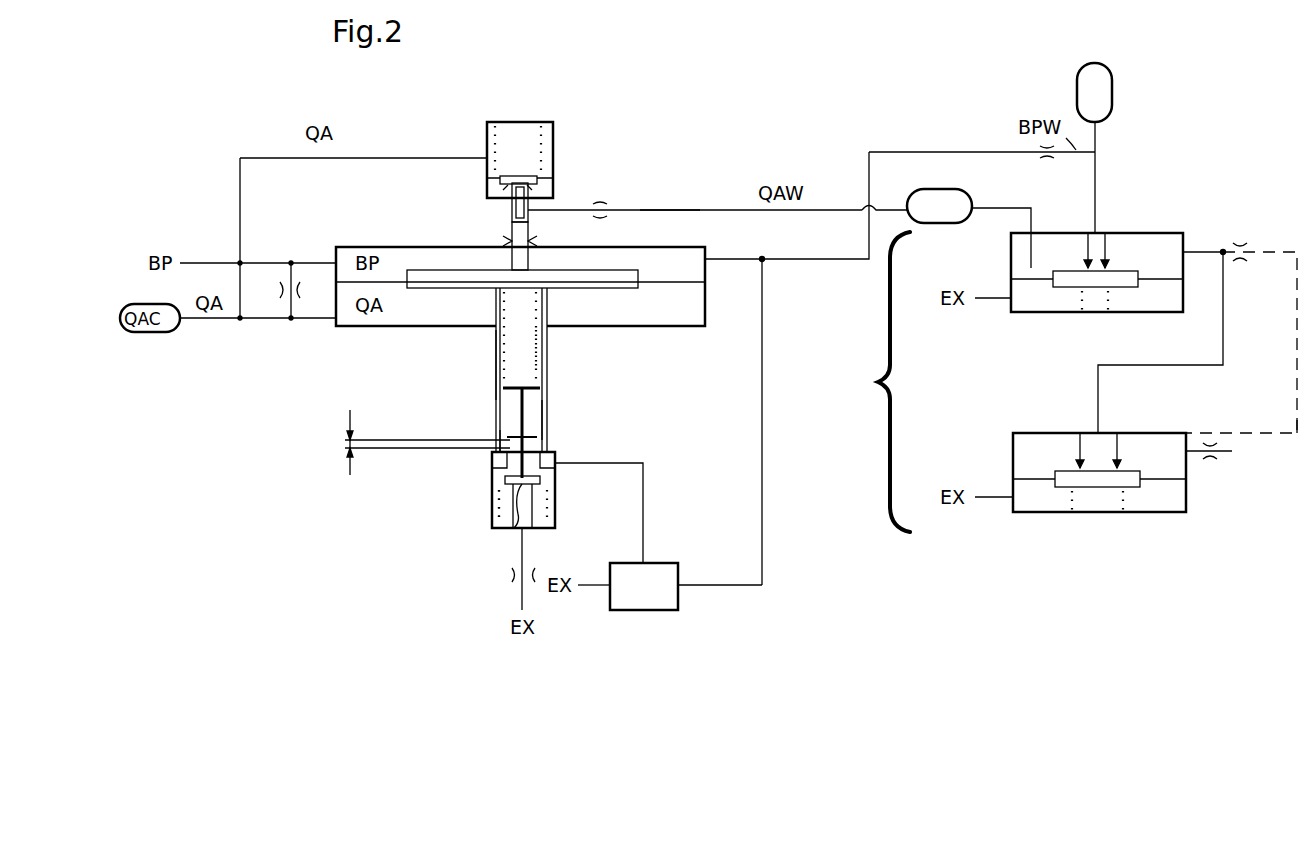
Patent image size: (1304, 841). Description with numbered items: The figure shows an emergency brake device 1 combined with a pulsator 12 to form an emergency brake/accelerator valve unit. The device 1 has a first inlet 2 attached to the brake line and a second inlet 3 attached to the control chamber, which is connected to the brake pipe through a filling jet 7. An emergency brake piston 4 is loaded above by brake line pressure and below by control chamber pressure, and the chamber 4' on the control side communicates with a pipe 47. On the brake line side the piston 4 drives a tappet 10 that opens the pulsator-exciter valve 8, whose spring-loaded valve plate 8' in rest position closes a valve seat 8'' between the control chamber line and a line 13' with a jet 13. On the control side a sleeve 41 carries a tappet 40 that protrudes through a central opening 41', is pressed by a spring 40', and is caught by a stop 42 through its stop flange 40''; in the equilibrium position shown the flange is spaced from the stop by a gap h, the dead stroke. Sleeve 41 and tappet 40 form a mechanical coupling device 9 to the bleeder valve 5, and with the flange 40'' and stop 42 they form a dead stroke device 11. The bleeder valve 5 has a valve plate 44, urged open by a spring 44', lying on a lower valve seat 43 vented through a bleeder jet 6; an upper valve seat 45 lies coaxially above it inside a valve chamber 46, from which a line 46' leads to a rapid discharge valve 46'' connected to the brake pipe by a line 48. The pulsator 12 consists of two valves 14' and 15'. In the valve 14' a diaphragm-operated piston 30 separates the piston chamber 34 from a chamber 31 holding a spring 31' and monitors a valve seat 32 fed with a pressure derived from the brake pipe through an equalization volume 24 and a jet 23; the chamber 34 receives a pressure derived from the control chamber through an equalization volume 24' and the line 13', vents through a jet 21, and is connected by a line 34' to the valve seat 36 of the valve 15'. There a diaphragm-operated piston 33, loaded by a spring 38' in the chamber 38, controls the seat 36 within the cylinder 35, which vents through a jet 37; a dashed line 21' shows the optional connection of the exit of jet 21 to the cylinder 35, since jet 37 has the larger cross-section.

The emergency brake device 1 is at (425, 335).
The first inlet 2 is at (353, 252).
The second inlet 3 is at (335, 330).
The emergency brake piston 4 is at (522, 250).
The chamber 4' is at (671, 323).
The QA bleeder valve 5 is at (485, 492).
The QA bleeder jet 6 is at (536, 570).
The filling jet 7 is at (280, 290).
The pulsator-exciter valve 8 is at (546, 155).
The valve plate 8' is at (518, 163).
The valve seat 8'' is at (492, 200).
The mechanical coupling device 9 is at (549, 398).
The tappet 10 is at (512, 230).
The dead stroke device 11 is at (513, 414).
The pulsator 12 is at (876, 382).
The jet 13 is at (695, 192).
The line 13' is at (673, 188).
The first valve 14' is at (1106, 254).
The second valve 15' is at (1099, 454).
The jet 21 is at (1240, 338).
The dashed line 21' is at (1278, 407).
The jet 23 is at (1047, 162).
The equalization volume 24 is at (1111, 130).
The equalization volume 24' is at (945, 191).
The diaphragm-operated piston 30 is at (1128, 290).
The second valve chamber 31 is at (1000, 323).
The spring 31' is at (1076, 320).
The valve seat 32 is at (1085, 268).
The diaphragm-operated piston 33 is at (1064, 492).
The piston chamber 34 is at (1114, 232).
The line 34' is at (1195, 342).
The cylinder 35 is at (1168, 448).
The valve seat 36 is at (1078, 466).
The jet 37 is at (1212, 464).
The fourth valve chamber 38 is at (1137, 512).
The spring 38' is at (1122, 522).
The tappet 40 is at (556, 478).
The spring 40' is at (567, 350).
The stop flange 40'' is at (577, 420).
The sleeve 41 is at (545, 370).
The central opening 41' is at (472, 435).
The stop 42 is at (545, 455).
The valve seat 43 is at (513, 528).
The valve plate 44 is at (560, 506).
The spring 44' is at (473, 523).
The upper valve seat 45 is at (507, 463).
The valve chamber 46 is at (493, 490).
The line 46' is at (632, 513).
The BP rapid discharge valve 46'' is at (656, 612).
The pipe 47 is at (495, 343).
The line 48 is at (722, 585).
The gap h is at (414, 442).